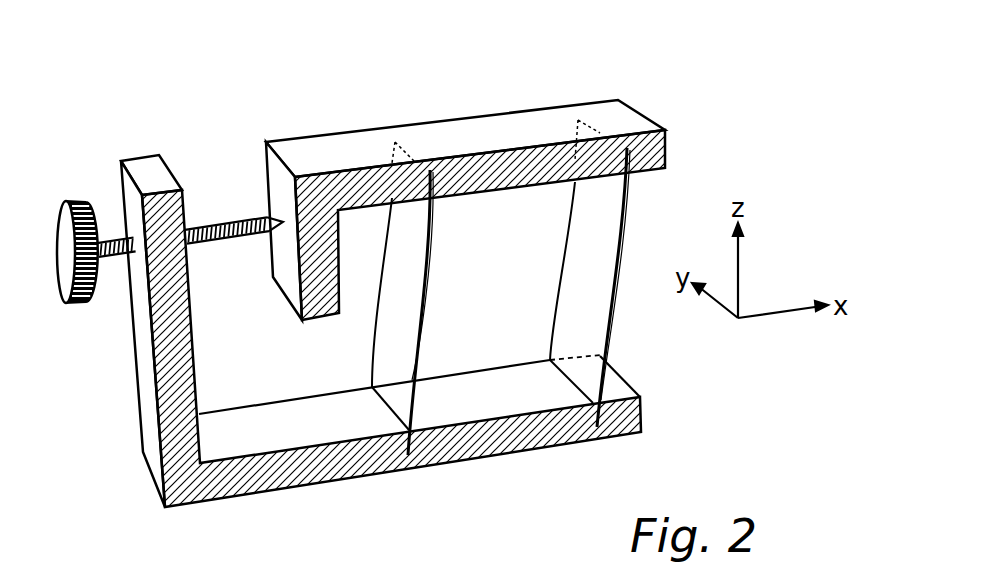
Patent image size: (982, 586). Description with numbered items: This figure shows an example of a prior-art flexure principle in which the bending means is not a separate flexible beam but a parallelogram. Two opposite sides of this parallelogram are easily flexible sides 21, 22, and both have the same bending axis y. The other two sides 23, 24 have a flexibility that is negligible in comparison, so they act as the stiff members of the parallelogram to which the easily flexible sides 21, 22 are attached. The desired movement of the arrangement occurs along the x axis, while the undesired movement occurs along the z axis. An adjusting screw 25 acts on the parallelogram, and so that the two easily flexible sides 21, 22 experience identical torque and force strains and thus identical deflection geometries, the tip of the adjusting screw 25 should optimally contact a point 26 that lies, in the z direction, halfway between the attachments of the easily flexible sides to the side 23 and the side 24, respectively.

The easily flexible side 21 is at (429, 283).
The easily flexible side 22 is at (612, 297).
The side 23 is at (468, 459).
The side 24 is at (498, 127).
The adjusting screw 25 is at (75, 202).
The point 26 is at (283, 223).